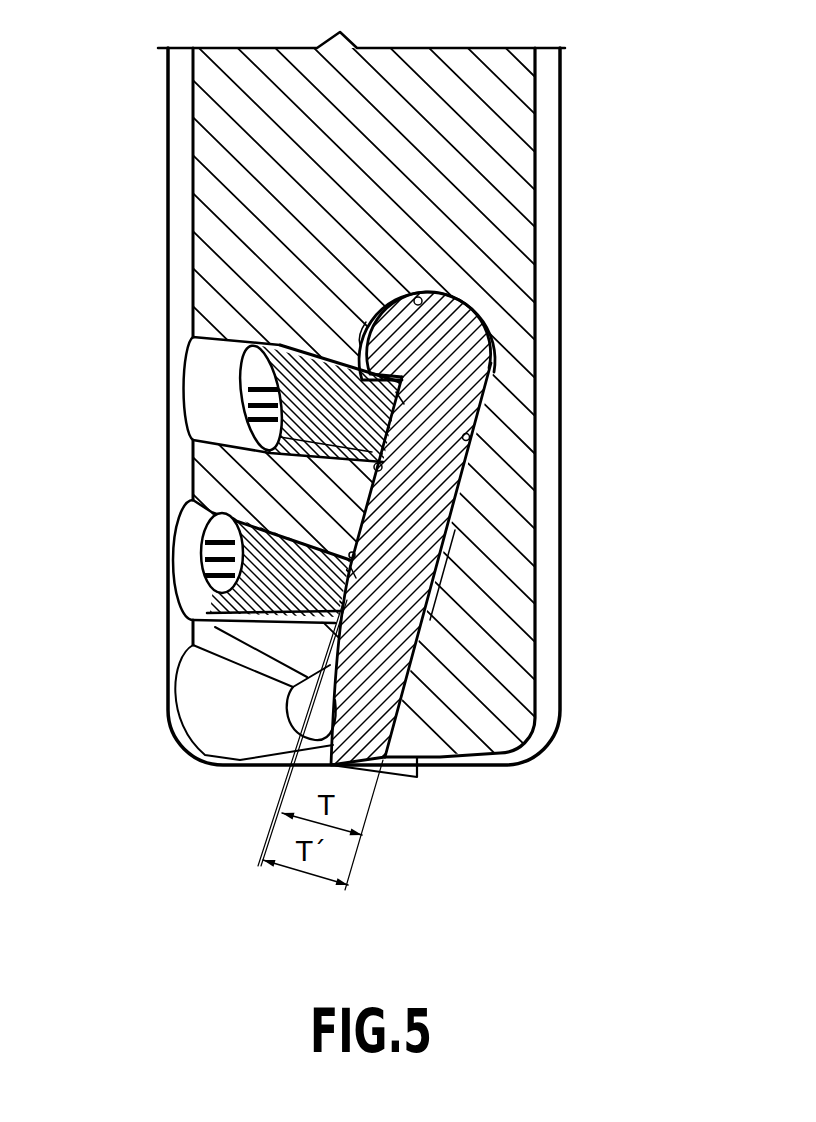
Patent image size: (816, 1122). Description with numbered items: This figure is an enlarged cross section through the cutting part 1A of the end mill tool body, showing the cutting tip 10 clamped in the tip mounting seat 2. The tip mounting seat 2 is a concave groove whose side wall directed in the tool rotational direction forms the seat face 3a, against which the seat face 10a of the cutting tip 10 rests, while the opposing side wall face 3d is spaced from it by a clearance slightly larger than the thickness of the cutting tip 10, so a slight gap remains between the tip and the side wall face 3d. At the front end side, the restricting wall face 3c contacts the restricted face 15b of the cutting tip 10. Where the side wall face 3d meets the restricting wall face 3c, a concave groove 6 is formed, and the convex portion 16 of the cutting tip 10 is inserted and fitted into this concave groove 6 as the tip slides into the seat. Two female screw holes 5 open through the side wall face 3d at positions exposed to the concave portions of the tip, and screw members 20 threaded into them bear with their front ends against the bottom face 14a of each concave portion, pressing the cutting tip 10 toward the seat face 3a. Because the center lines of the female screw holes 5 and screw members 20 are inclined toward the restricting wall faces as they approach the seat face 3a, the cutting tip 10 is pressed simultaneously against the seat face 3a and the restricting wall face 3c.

The cutting part 1A is at (572, 92).
The tip mounting seat 2 is at (418, 512).
The seat face 3a is at (470, 434).
The restricting wall face 3c is at (410, 293).
The side wall face 3d is at (295, 688).
The female screw hole 5 is at (252, 342).
The concave groove 6 is at (358, 331).
The cutting tip 10 is at (462, 514).
The seat face 10a is at (436, 572).
The bottom face 14a is at (405, 404).
The restricted face 15b is at (427, 302).
The convex portion 16 is at (432, 299).
The screw member 20 is at (349, 553).